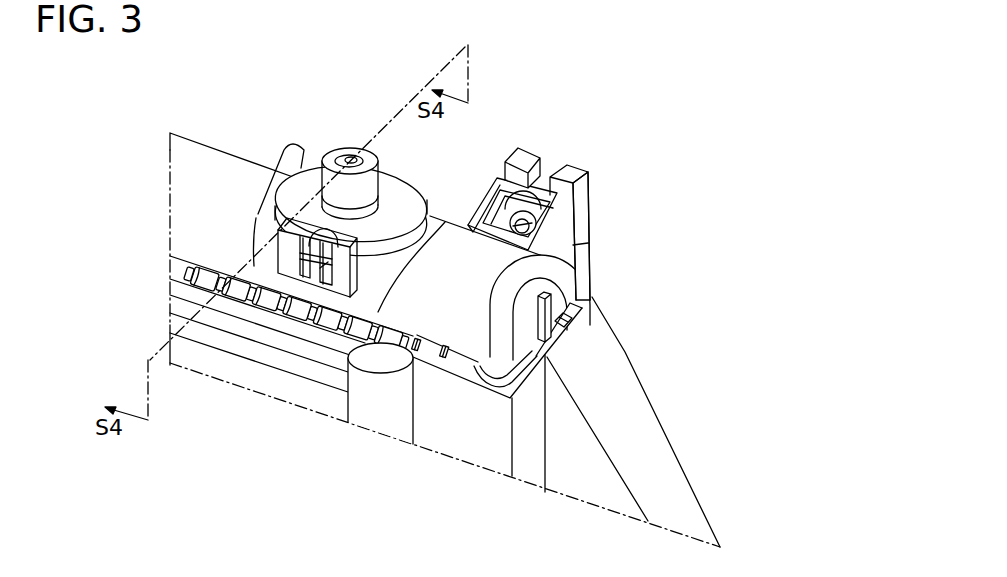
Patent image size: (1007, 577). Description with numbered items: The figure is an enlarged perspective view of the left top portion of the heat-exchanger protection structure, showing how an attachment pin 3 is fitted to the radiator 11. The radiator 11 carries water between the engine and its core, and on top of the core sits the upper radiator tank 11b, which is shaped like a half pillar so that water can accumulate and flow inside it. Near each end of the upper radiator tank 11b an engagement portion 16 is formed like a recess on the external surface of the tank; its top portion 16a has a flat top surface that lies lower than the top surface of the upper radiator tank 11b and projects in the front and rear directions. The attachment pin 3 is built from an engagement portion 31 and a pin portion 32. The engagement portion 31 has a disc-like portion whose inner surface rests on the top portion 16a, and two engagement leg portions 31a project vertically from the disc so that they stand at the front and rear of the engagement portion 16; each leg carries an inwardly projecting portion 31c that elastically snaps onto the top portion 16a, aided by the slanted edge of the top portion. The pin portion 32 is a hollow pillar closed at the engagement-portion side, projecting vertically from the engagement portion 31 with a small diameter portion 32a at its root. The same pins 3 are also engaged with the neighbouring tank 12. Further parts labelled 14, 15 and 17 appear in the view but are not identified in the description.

The attachment pin 3 is at (406, 262).
The radiator 11 is at (530, 397).
The upper radiator tank 11b is at (197, 157).
The tank 12 is at (333, 407).
The side wall 14 is at (628, 403).
The mounting frame with screw 15 is at (522, 225).
The engagement portion 16 is at (248, 271).
The top portion 16a is at (320, 268).
The cylindrical boss 17 is at (415, 420).
The engagement portion 31 is at (308, 185).
The engagement leg portion 31a is at (289, 266).
The inwardly projecting portion 31c is at (315, 245).
The pin portion 32 is at (346, 150).
The small diameter portion 32a is at (363, 212).